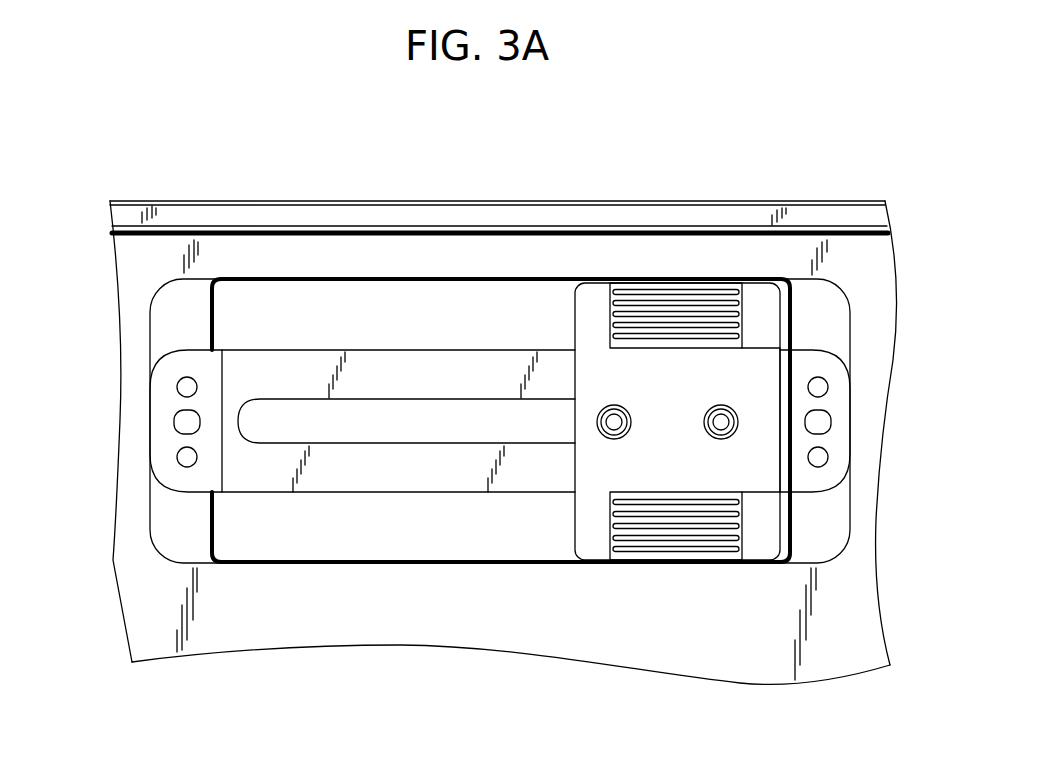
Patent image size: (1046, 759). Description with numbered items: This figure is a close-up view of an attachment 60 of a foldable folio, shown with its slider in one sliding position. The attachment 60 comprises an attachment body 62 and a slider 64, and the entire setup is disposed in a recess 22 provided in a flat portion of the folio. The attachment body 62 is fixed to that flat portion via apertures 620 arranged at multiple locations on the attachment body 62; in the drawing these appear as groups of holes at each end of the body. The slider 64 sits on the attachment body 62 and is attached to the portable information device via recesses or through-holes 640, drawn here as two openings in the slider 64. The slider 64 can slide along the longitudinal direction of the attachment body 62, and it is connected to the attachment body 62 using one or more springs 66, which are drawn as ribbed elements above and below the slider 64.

The recess 22 is at (340, 540).
The attachment 60 is at (422, 278).
The attachment body 62 is at (182, 475).
The apertures 620 is at (177, 388).
The slider 64 is at (592, 542).
The springs 66 is at (680, 557).
The recesses or through-holes 640 is at (732, 407).